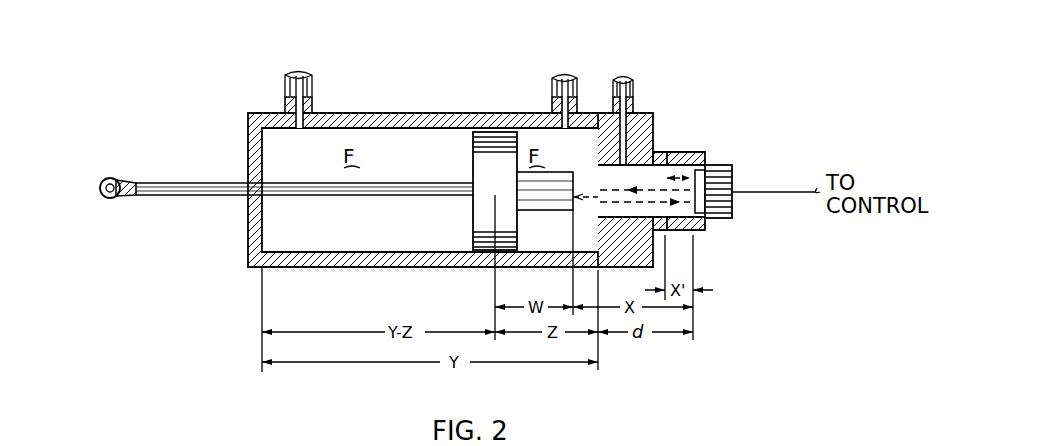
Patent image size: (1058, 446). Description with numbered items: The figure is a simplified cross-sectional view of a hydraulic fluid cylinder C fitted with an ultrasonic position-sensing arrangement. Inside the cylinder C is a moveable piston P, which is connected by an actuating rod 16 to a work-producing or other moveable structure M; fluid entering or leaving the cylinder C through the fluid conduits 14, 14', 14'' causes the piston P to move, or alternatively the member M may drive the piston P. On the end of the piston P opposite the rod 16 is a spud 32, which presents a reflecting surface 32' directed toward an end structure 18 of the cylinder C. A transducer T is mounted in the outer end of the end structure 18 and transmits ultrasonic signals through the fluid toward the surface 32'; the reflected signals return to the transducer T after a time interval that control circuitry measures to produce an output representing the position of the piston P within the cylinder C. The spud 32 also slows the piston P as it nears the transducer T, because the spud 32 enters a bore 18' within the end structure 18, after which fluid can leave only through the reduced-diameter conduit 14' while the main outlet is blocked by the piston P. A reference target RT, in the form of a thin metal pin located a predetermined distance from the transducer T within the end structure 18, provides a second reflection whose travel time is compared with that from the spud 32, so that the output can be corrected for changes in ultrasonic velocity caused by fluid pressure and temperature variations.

The fluid conduit 14 is at (321, 74).
The fluid conduit 14' is at (530, 75).
The fluid port 14'' is at (650, 98).
The actuating rod 16 is at (405, 197).
The spud 32 is at (506, 238).
The surface 32' is at (594, 110).
The end structure 18 is at (720, 231).
The bore 18' is at (698, 106).
The fluid cylinder C is at (438, 113).
The moveable structure M is at (118, 178).
The piston P is at (500, 180).
The reference target RT is at (670, 152).
The transducer T is at (715, 218).